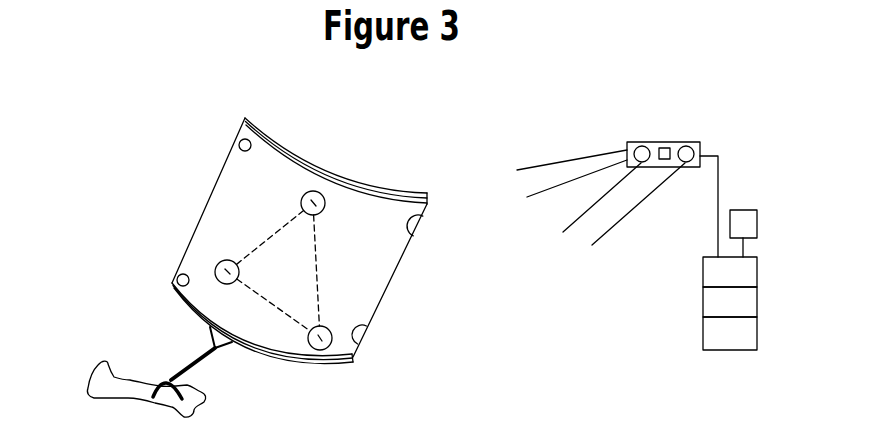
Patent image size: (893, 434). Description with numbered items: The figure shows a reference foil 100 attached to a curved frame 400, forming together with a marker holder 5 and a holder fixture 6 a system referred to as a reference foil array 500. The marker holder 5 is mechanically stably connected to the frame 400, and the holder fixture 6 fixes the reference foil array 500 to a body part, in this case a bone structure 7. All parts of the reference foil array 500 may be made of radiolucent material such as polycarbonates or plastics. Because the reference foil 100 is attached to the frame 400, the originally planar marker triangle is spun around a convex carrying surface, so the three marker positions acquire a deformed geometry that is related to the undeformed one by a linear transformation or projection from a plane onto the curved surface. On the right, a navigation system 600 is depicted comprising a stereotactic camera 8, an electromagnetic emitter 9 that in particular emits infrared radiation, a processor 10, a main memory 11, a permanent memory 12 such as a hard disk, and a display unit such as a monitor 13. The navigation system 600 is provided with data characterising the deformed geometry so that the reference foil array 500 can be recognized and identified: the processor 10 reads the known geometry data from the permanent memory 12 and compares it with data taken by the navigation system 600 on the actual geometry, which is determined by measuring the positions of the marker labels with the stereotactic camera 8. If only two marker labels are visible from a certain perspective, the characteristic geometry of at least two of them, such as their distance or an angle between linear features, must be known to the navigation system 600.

The reference foil 100 is at (217, 170).
The frame 400 is at (283, 145).
The reference foil array 500 is at (110, 238).
The marker holder 5 is at (190, 357).
The holder fixture 6 is at (158, 385).
The bone structure 7 is at (97, 390).
The stereotactic camera 8 is at (635, 147).
The electromagnetic emitter 9 is at (660, 147).
The navigation system 600 is at (733, 167).
The processor 10 is at (713, 268).
The processing unit module 11 is at (710, 302).
The permanent memory 12 is at (713, 333).
The monitor 13 is at (750, 223).